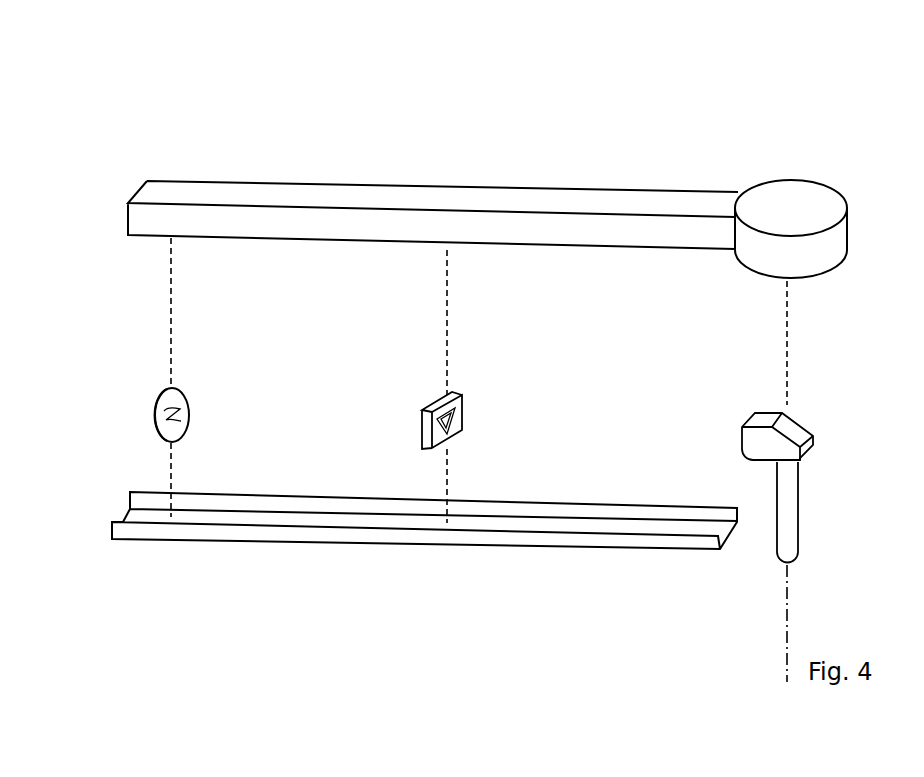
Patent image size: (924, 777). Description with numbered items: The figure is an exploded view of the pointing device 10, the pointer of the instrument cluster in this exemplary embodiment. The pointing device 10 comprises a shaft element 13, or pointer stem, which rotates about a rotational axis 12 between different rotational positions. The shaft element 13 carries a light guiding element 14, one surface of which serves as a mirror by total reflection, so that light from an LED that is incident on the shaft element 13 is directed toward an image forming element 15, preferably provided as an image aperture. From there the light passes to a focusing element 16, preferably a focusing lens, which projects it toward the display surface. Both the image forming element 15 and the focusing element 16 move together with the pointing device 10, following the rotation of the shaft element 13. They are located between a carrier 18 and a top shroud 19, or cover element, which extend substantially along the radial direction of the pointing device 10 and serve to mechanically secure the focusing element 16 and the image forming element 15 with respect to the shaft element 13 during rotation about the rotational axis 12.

The pointing device 10 is at (457, 164).
The rotational axis 12 is at (790, 637).
The shaft element 13 is at (821, 443).
The light guiding element 14 is at (806, 392).
The image forming element 15 is at (472, 413).
The focusing element 16 is at (195, 408).
The carrier 18 is at (550, 503).
The top shroud 19 is at (700, 205).